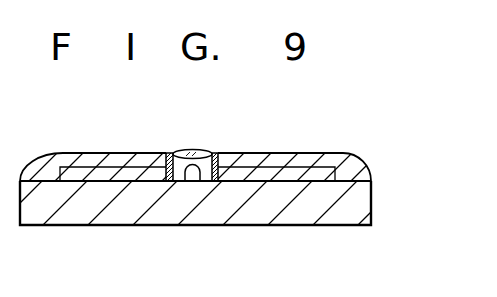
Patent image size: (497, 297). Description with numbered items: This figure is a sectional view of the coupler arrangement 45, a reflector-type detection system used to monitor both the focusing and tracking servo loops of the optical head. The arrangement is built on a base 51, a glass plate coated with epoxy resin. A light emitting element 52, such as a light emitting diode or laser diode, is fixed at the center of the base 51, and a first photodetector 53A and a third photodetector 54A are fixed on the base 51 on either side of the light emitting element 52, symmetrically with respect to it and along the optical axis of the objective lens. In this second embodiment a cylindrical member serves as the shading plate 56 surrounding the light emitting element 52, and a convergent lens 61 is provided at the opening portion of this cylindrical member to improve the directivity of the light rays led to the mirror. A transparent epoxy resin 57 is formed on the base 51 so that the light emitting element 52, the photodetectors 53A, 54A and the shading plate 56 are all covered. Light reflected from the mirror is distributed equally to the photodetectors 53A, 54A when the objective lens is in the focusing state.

The coupler arrangement 45 is at (356, 138).
The base 51 is at (350, 210).
The light emitting element 52 is at (193, 176).
The first photodetector 53A is at (87, 173).
The third photodetector 54A is at (268, 165).
The shading plate 56 is at (168, 153).
The transparent epoxy resin 57 is at (350, 157).
The convergent lens 61 is at (197, 148).